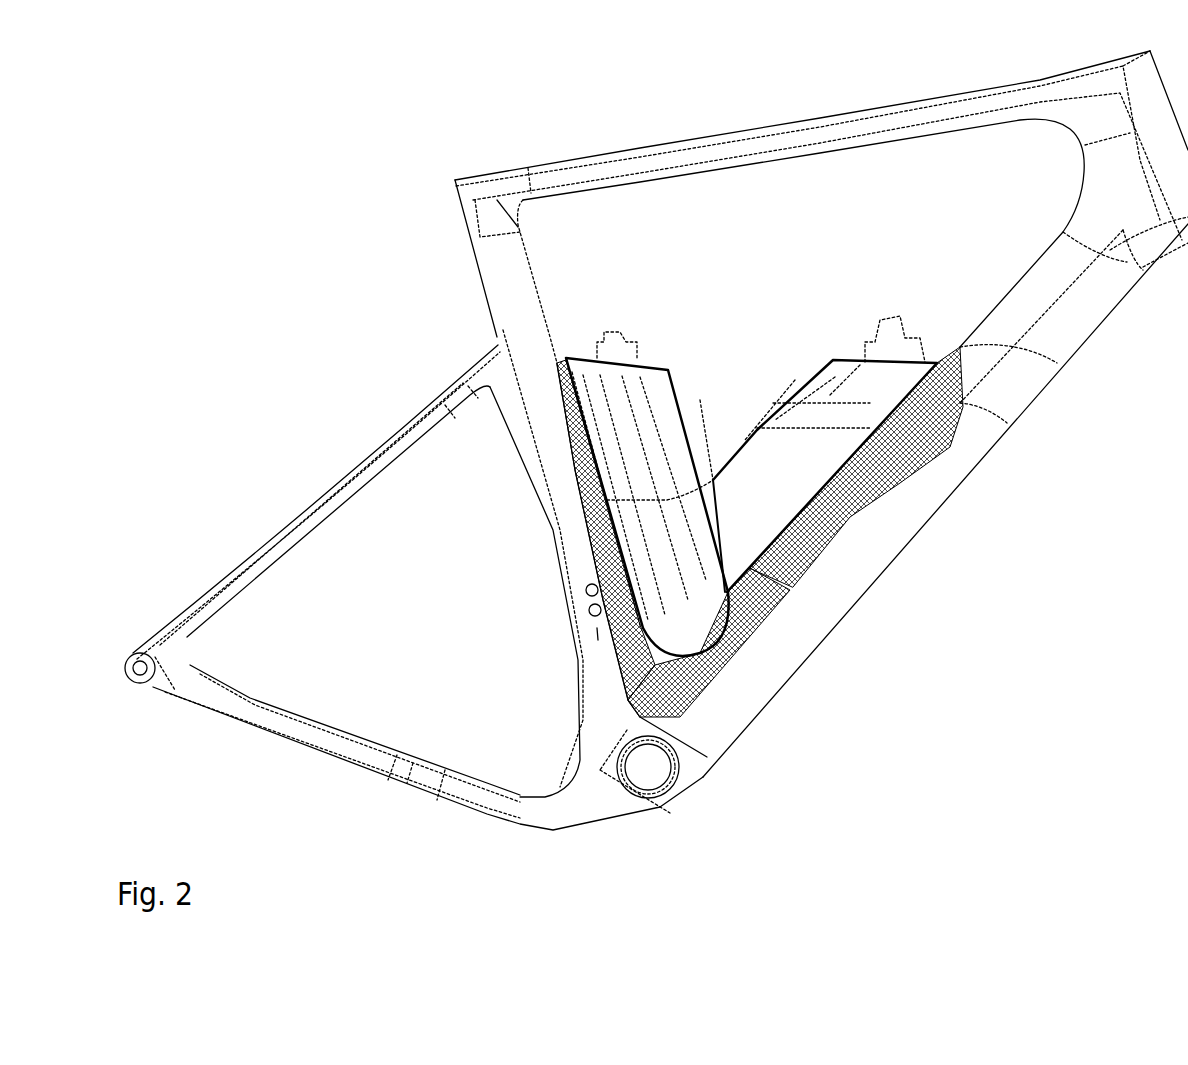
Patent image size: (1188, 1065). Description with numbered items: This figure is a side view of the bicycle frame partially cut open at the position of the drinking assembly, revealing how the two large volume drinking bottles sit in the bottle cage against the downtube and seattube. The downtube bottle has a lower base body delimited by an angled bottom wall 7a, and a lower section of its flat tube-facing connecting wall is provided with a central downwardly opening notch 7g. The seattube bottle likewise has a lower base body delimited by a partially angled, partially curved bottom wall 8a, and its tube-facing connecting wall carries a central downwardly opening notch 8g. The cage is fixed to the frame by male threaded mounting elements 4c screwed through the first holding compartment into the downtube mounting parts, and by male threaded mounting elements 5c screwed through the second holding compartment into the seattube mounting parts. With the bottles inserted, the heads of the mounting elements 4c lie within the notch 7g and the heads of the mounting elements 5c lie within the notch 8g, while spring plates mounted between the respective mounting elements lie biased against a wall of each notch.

The male threaded mounting elements 4c is at (797, 527).
The male threaded mounting elements 5c is at (640, 605).
The angled bottom wall 7a is at (718, 550).
The central downwardly opening notch 7g is at (787, 555).
The partially angled partially curved bottom wall 8a is at (737, 643).
The central downwardly opening notch 8g is at (605, 575).